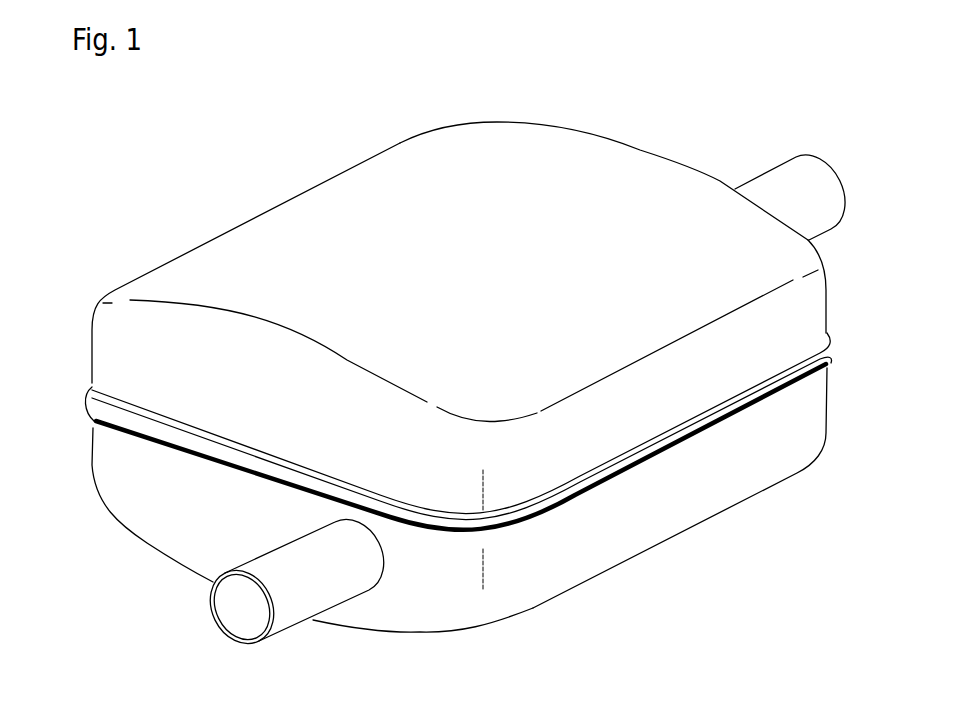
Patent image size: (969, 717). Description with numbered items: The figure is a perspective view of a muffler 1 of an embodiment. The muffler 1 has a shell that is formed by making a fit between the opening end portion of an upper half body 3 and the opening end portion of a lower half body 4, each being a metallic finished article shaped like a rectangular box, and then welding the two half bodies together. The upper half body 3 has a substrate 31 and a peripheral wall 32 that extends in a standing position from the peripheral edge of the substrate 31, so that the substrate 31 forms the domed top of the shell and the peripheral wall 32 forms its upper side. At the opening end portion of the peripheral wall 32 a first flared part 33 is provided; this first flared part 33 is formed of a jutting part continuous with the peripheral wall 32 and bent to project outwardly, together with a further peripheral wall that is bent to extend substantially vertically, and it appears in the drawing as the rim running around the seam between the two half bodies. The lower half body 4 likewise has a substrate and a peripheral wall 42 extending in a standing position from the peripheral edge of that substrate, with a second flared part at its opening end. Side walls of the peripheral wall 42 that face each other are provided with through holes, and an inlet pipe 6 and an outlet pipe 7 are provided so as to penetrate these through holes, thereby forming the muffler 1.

The muffler 1 is at (252, 194).
The upper half body 3 is at (335, 173).
The substrate 31 is at (615, 163).
The peripheral wall 32 is at (808, 313).
The first flared part 33 is at (112, 420).
The lower half body 4 is at (747, 497).
The peripheral wall 42 is at (623, 533).
The inlet pipe 6 is at (292, 608).
The outlet pipe 7 is at (766, 187).